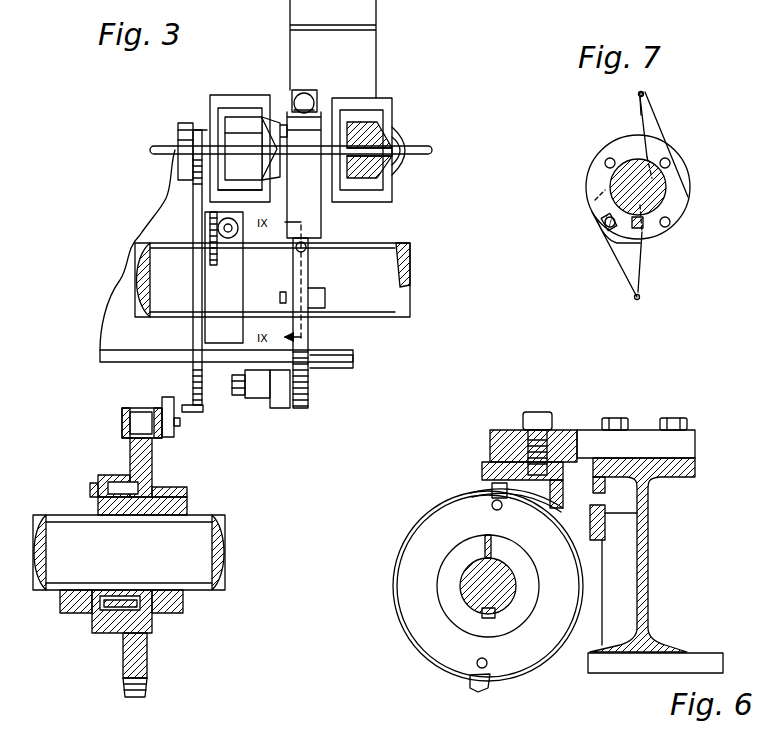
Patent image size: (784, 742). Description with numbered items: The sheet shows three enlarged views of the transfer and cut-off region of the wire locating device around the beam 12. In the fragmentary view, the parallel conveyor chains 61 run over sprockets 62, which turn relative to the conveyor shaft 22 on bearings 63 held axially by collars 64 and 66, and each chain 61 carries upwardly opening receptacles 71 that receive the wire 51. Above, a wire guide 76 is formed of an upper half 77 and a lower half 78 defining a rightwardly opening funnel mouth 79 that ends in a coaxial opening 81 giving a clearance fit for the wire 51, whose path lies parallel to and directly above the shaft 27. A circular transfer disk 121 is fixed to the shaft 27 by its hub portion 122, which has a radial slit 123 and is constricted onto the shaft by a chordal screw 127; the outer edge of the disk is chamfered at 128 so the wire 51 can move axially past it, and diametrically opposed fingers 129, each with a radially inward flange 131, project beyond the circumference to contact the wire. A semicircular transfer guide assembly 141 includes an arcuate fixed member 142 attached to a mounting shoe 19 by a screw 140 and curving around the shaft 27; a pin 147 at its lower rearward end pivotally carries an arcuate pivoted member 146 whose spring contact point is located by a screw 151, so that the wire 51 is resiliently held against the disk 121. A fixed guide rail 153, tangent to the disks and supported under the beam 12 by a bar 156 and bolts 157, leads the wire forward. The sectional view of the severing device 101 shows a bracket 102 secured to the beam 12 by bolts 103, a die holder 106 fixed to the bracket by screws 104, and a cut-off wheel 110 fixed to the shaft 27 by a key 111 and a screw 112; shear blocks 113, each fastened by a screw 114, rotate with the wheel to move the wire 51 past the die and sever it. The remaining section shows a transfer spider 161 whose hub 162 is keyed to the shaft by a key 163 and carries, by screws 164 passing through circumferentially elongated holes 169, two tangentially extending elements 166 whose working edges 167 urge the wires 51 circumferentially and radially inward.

In FIG. 3, the beam 12 is at (108, 350).
In FIG. 3, the mounting shoe 19 is at (375, 38).
In FIG. 3, the conveyor shaft 22 is at (215, 584).
In FIG. 3, the shaft 27 is at (400, 302).
In FIG. 7, the shaft 27 is at (660, 194).
In FIG. 6, the shaft 27 is at (506, 584).
In FIG. 3, the wire 51 is at (420, 150).
In FIG. 7, the wire 51 is at (636, 95).
In FIG. 6, the wire 51 is at (472, 494).
In FIG. 3, the conveyor chain 61 is at (142, 418).
In FIG. 3, the sprocket 62 is at (148, 667).
In FIG. 3, the bearing 63 is at (152, 492).
In FIG. 3, the collar 64 is at (78, 612).
In FIG. 3, the collar 66 is at (175, 611).
In FIG. 3, the receptacle 71 is at (170, 422).
In FIG. 3, the wire guide 76 is at (238, 90).
In FIG. 3, the upper half 77 is at (215, 198).
In FIG. 3, the lower half 78 is at (220, 193).
In FIG. 3, the funnel mouth 79 is at (400, 135).
In FIG. 3, the coaxial opening 81 is at (400, 168).
In FIG. 6, the severing device 101 is at (478, 430).
In FIG. 6, the bracket 102 is at (688, 450).
In FIG. 6, the bolt 103 is at (670, 418).
In FIG. 6, the screw 104 is at (538, 425).
In FIG. 6, the die holder 106 is at (482, 470).
In FIG. 6, the cut-off wheel 110 is at (416, 614).
In FIG. 6, the key 111 is at (490, 620).
In FIG. 6, the screw 112 is at (496, 548).
In FIG. 6, the shear block 113 is at (492, 500).
In FIG. 6, the screw 114 is at (500, 508).
In FIG. 3, the transfer disk 121 is at (193, 238).
In FIG. 3, the hub portion 122 is at (215, 327).
In FIG. 3, the radial slit 123 is at (214, 262).
In FIG. 3, the screw 127 is at (239, 231).
In FIG. 3, the chamfer 128 is at (201, 397).
In FIG. 3, the finger 129 is at (186, 150).
In FIG. 3, the flange 131 is at (180, 160).
In FIG. 3, the screw 140 is at (308, 100).
In FIG. 3, the transfer guide assembly 141 is at (300, 80).
In FIG. 3, the fixed member 142 is at (310, 212).
In FIG. 3, the pivoted member 146 is at (310, 402).
In FIG. 3, the pin 147 is at (326, 308).
In FIG. 3, the screw 151 is at (306, 250).
In FIG. 3, the guide rail 153 is at (285, 408).
In FIG. 3, the bar 156 is at (270, 358).
In FIG. 3, the bolt 157 is at (247, 383).
In FIG. 7, the transfer spider 161 is at (690, 132).
In FIG. 7, the hub 162 is at (682, 208).
In FIG. 7, the key 163 is at (645, 230).
In FIG. 7, the screw 164 is at (670, 164).
In FIG. 7, the element 166 is at (652, 118).
In FIG. 7, the working edge 167 is at (640, 116).
In FIG. 7, the elongated hole 169 is at (604, 223).